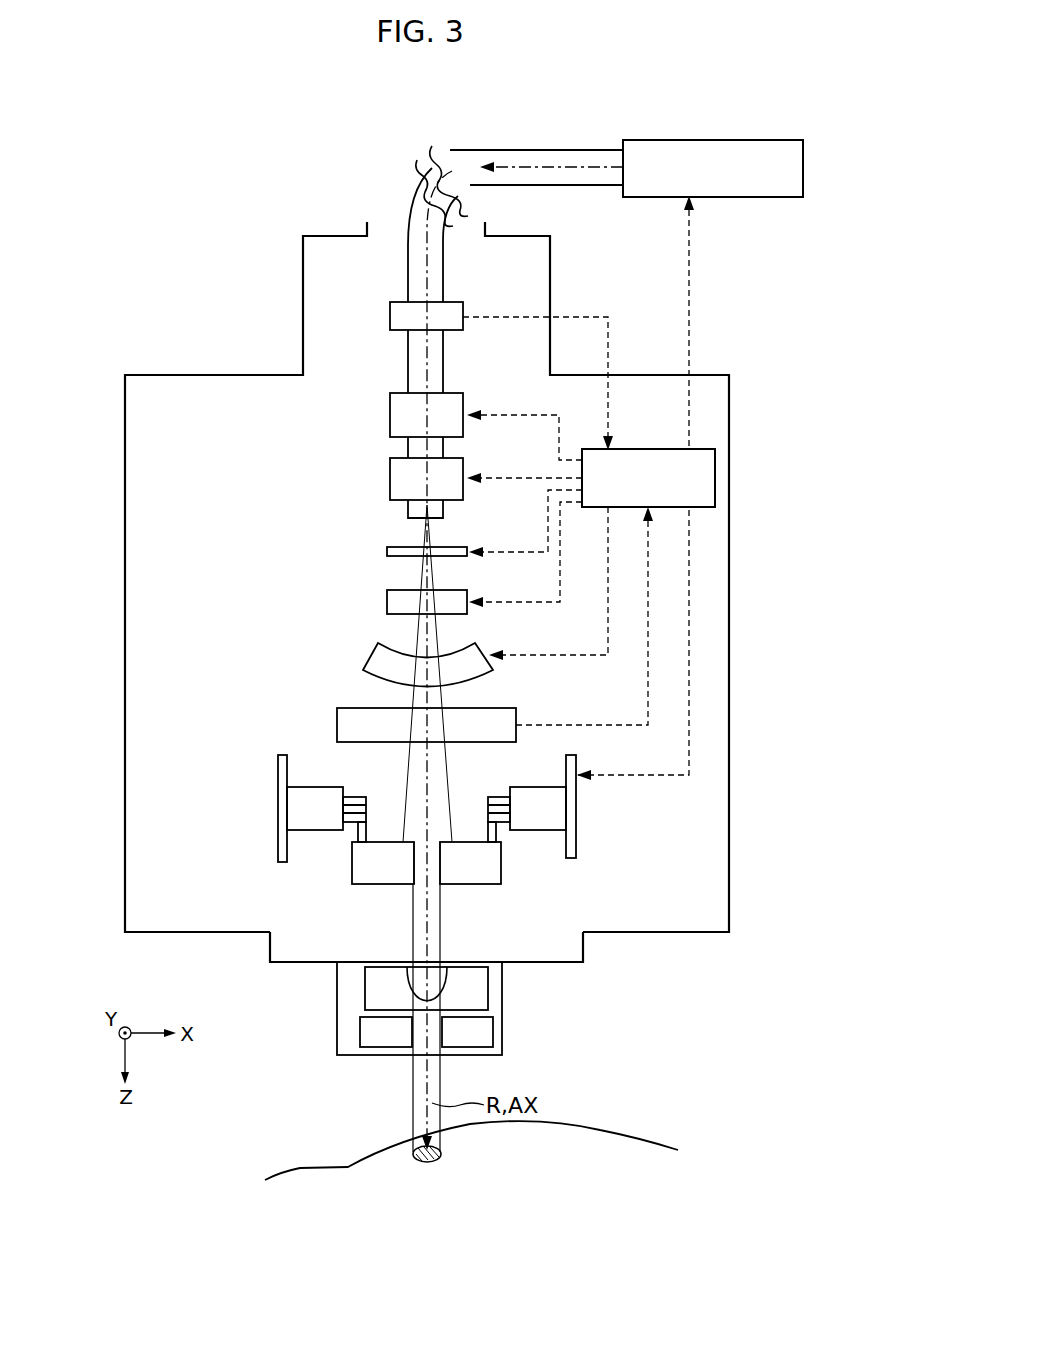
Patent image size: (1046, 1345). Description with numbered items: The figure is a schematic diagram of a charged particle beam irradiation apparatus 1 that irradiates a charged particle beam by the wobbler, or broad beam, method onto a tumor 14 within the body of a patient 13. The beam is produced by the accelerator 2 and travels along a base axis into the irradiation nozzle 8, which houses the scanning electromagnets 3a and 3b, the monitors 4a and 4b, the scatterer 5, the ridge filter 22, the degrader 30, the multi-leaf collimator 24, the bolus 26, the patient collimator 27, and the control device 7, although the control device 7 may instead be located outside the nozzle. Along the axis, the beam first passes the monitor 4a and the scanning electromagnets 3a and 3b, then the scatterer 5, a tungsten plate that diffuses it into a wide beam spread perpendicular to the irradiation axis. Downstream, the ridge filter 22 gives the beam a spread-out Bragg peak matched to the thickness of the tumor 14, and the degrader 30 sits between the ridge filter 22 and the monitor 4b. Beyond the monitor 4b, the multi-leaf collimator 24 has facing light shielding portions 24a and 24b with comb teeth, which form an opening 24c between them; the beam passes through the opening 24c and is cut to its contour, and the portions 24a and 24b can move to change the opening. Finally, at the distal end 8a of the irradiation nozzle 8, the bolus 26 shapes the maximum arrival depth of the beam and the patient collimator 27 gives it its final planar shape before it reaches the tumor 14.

The charged particle beam irradiation apparatus 1 is at (186, 166).
The accelerator 2 is at (780, 140).
The scanning electromagnet 3a is at (390, 415).
The scanning electromagnet 3b is at (390, 478).
The monitor 4a is at (390, 317).
The monitor 4b is at (337, 725).
The scatterer 5 is at (387, 551).
The control device 7 is at (692, 449).
The irradiation nozzle 8 is at (729, 592).
The distal end of irradiation nozzle 8a is at (266, 943).
The patient 13 is at (300, 1168).
The tumor 14 is at (442, 1153).
The ridge filter 22 is at (387, 602).
The multi-leaf collimator 24 is at (442, 844).
The light shielding portion 24a is at (348, 874).
The light shielding portion 24b is at (512, 864).
The opening 24c is at (421, 868).
The bolus 26 is at (493, 985).
The patient collimator 27 is at (495, 1035).
The degrader 30 is at (378, 655).